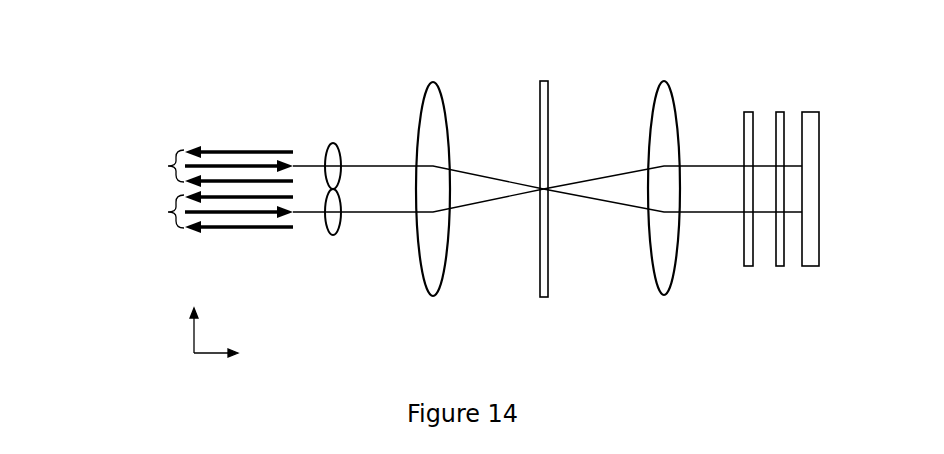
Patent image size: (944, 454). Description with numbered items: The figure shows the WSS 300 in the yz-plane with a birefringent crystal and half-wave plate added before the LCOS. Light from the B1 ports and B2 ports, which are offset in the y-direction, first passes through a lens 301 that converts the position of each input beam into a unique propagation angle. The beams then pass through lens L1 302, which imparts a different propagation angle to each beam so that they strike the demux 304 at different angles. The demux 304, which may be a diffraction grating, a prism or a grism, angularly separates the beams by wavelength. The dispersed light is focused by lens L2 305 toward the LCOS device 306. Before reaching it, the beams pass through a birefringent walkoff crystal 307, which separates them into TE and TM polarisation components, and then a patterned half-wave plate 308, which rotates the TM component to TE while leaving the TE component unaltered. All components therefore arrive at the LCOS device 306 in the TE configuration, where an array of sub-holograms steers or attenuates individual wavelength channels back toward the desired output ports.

The WSS 300 is at (185, 101).
The lens 301 is at (335, 143).
The lens L1 302 is at (436, 81).
The demultiplexer 304 is at (547, 80).
The lens L2 305 is at (663, 79).
The LCOS device 306 is at (811, 111).
The birefringent walkoff crystal 307 is at (748, 111).
The patterned half-wave plate 308 is at (780, 111).